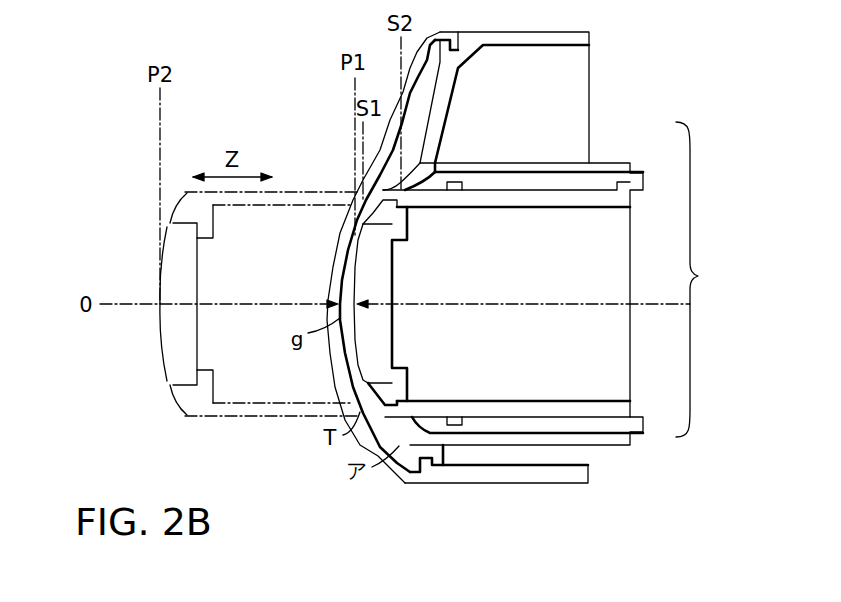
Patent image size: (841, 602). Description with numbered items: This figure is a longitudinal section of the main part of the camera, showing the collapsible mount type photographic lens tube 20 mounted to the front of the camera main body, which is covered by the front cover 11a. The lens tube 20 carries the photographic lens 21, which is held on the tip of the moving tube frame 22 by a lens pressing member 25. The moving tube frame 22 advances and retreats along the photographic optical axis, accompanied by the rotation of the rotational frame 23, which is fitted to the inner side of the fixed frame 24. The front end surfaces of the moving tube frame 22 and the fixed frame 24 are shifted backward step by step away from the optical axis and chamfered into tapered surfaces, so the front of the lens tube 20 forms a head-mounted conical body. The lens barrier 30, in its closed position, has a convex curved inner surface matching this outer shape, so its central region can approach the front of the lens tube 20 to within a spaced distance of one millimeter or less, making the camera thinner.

The front cover 11a is at (583, 89).
The collapsible mount type photographic lens tube 20 is at (721, 280).
The photographic lens 21 is at (393, 272).
The moving tube frame 22 is at (600, 402).
The rotational frame 23 is at (596, 185).
The fixed frame 24 is at (613, 163).
The lens pressing member 25 is at (353, 369).
The lens barrier 30 is at (343, 237).